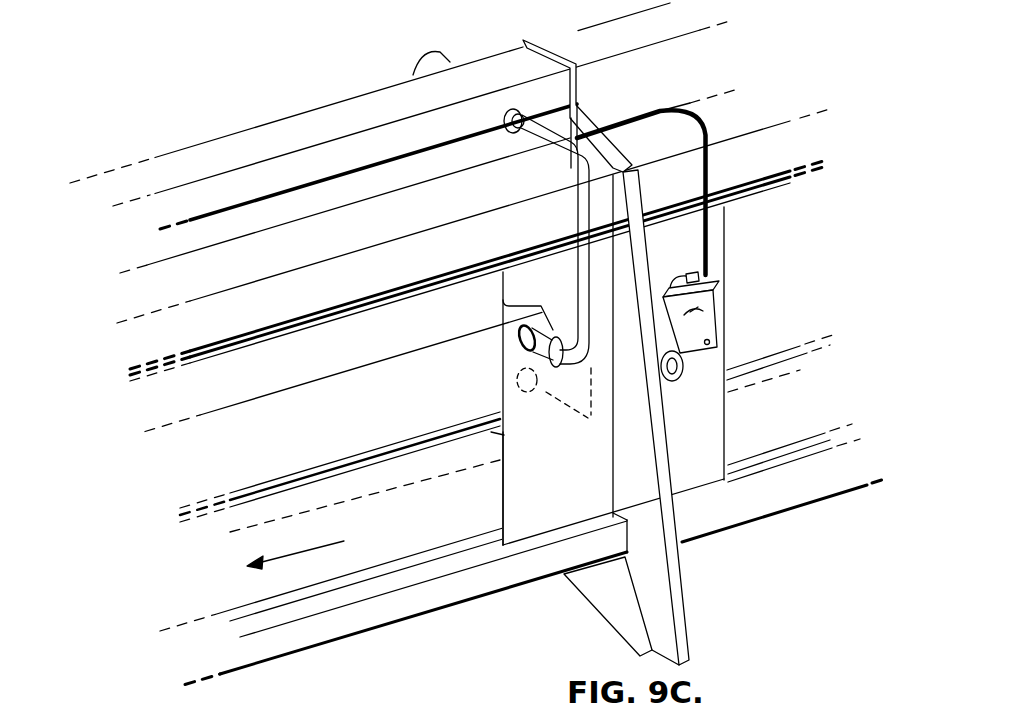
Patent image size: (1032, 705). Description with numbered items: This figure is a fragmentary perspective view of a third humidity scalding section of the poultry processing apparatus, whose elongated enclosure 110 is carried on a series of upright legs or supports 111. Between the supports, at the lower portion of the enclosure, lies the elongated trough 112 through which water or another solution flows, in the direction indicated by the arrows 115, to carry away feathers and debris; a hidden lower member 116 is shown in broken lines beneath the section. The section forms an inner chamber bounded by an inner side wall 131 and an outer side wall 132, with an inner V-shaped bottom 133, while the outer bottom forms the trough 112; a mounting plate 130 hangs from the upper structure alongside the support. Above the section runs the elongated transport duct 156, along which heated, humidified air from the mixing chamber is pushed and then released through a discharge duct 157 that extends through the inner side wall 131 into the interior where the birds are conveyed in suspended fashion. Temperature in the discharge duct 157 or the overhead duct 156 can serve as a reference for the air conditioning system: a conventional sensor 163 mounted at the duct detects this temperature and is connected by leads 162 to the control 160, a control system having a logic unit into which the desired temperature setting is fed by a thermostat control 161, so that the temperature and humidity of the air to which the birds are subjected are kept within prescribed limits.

The elongated enclosure 110 is at (365, 50).
The upright legs or supports 111 is at (649, 598).
The elongated trough 112 is at (400, 561).
The arrows 115 is at (300, 547).
The hidden rail member 116 is at (383, 498).
The mounting plate 130 is at (591, 498).
The inner side wall 131 is at (430, 381).
The outer side wall 132 is at (512, 494).
The inner V-shaped bottom 133 is at (521, 374).
The elongated transport duct 156 is at (316, 182).
The discharge duct 157 is at (578, 221).
The control system 160 is at (721, 308).
The thermostat control 161 is at (721, 326).
The leads 162 is at (452, 147).
The sensors 163 is at (520, 113).